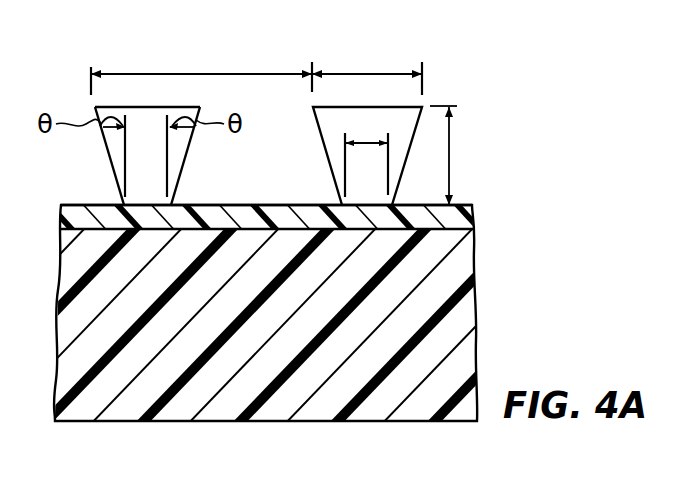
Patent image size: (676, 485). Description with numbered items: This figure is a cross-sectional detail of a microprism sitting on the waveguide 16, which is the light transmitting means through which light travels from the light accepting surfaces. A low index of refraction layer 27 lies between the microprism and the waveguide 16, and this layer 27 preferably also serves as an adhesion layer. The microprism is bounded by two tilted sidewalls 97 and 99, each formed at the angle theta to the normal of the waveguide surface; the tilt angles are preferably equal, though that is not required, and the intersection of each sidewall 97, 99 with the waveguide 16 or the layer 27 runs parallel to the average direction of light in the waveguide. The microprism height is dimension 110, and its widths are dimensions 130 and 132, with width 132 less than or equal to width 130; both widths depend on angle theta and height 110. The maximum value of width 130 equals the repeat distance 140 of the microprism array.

The waveguide 16 is at (477, 260).
The low index of refraction layer 27 is at (472, 208).
The sidewall 97 is at (113, 170).
The sidewall 99 is at (182, 170).
The height dimension of microprism 110 is at (453, 150).
The width dimension 130 is at (387, 74).
The width dimension 132 is at (362, 143).
The repeat distance 140 is at (195, 74).